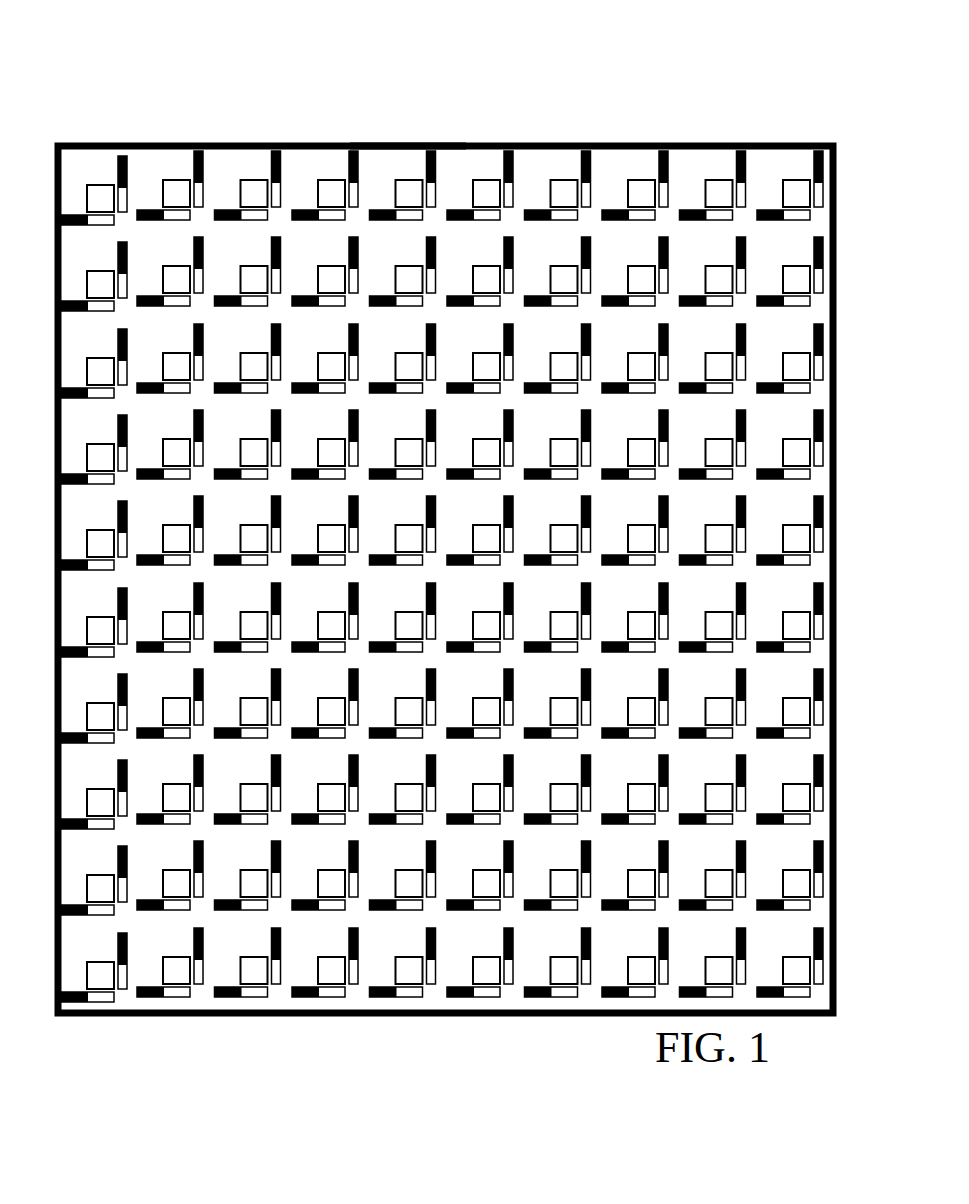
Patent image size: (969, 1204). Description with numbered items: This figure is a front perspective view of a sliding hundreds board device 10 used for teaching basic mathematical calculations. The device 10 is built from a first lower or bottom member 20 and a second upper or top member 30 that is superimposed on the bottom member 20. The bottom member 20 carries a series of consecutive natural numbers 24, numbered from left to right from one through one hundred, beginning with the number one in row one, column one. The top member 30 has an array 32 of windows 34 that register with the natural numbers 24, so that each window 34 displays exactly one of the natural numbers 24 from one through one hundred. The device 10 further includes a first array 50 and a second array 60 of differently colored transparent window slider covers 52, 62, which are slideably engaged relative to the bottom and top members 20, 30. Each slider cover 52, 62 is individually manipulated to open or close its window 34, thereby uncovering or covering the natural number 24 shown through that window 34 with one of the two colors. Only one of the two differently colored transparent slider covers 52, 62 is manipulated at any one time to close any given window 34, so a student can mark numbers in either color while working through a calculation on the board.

The sliding hundreds board device 10 is at (604, 91).
The first lower or bottom member 20 is at (708, 181).
The natural numbers 24 is at (92, 185).
The second upper or top member 30 is at (462, 170).
The array of windows 32 is at (405, 167).
The window 34 is at (332, 180).
The first array of transparent window slider covers 50 is at (150, 119).
The first colored transparent window slider cover 52 is at (138, 137).
The second array of transparent window slider covers 60 is at (180, 113).
The second colored transparent window slider cover 62 is at (175, 122).